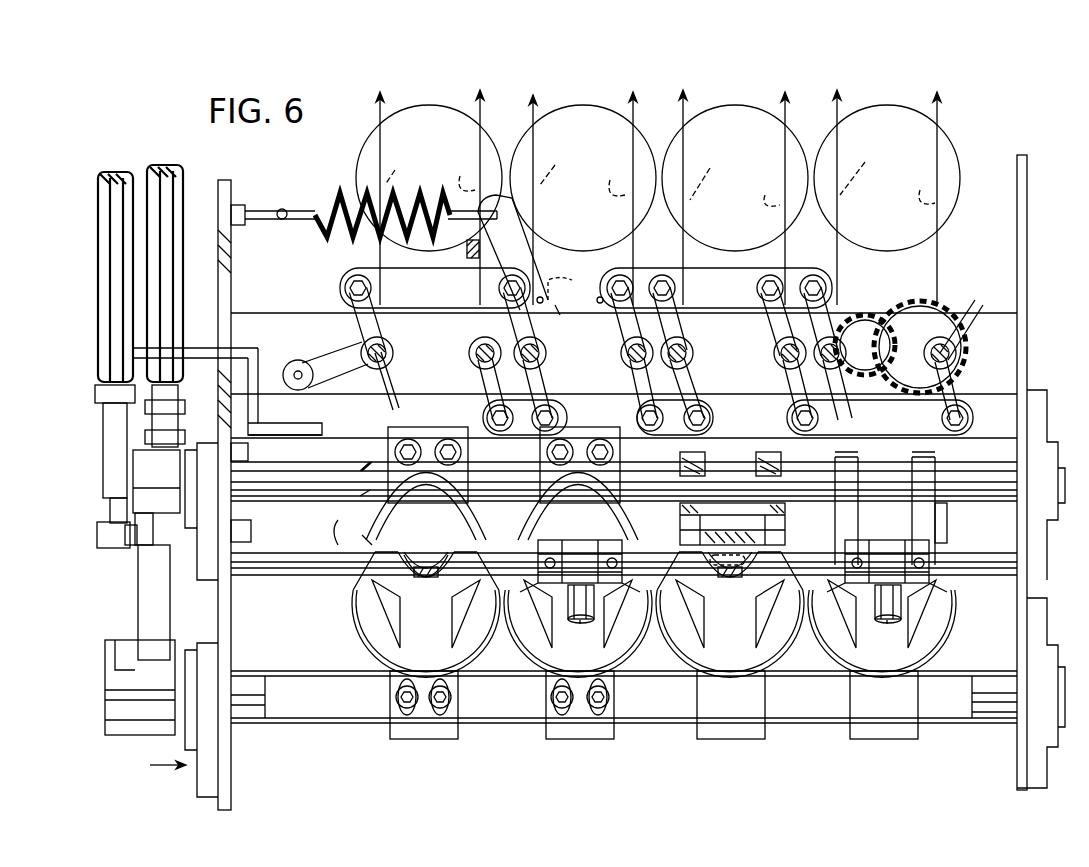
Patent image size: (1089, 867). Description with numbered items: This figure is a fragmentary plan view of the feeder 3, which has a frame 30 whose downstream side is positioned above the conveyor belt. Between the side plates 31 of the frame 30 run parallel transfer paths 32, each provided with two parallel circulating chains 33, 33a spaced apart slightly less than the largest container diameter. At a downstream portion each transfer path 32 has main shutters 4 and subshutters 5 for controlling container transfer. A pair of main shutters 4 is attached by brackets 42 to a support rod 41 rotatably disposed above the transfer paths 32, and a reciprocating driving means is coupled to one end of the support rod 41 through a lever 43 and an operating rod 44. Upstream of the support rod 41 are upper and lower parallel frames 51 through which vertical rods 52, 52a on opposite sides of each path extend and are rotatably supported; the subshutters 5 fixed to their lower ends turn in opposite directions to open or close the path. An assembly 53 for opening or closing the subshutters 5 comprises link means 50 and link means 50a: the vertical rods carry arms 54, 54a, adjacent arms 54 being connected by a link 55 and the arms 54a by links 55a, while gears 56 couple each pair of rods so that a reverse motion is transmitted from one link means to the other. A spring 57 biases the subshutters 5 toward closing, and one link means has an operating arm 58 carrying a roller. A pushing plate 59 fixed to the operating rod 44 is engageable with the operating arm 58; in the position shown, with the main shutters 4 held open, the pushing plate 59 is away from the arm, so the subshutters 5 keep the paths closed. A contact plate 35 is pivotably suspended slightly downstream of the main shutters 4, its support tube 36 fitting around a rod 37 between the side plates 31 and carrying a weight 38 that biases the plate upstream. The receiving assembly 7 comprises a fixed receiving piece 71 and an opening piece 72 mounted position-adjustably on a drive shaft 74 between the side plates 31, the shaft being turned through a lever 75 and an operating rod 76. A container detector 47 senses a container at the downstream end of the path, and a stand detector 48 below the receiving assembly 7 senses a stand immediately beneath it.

The feeder 3 is at (155, 765).
The main shutters 4 is at (380, 632).
The subshutters 5 is at (378, 398).
The receiving assembly 7 is at (328, 532).
The frame 30 is at (1038, 371).
The side plates 31 is at (226, 640).
The transfer paths 32 is at (428, 170).
The circulating chain 33 is at (630, 169).
The circulating chain 33a is at (690, 180).
The contact plate 35 is at (424, 580).
The support tube 36 is at (575, 548).
The rod 37 is at (318, 575).
The weight 38 is at (580, 622).
The support rod 41 is at (290, 500).
The brackets 42 is at (955, 532).
The lever 43 is at (135, 540).
The operating rod 44 is at (100, 345).
The container detector 47 is at (245, 456).
The stand detector 48 is at (243, 542).
The link means 50 is at (552, 286).
The link means 50a is at (593, 286).
The parallel frames 51 is at (286, 313).
The vertical rod 52 is at (390, 348).
The vertical rod 52a is at (475, 350).
The assembly 53 is at (563, 277).
The arms 54 is at (585, 290).
The arms 54a is at (592, 360).
The link 55 is at (385, 290).
The links 55a is at (690, 290).
The gears 56 is at (872, 318).
The spring 57 is at (427, 240).
The operating arm 58 is at (298, 360).
The pushing plate 59 is at (276, 420).
The receiving piece 71 is at (372, 520).
The opening piece 72 is at (372, 555).
The drive shaft 74 is at (330, 710).
The lever 75 is at (110, 660).
The operating rod 76 is at (160, 560).